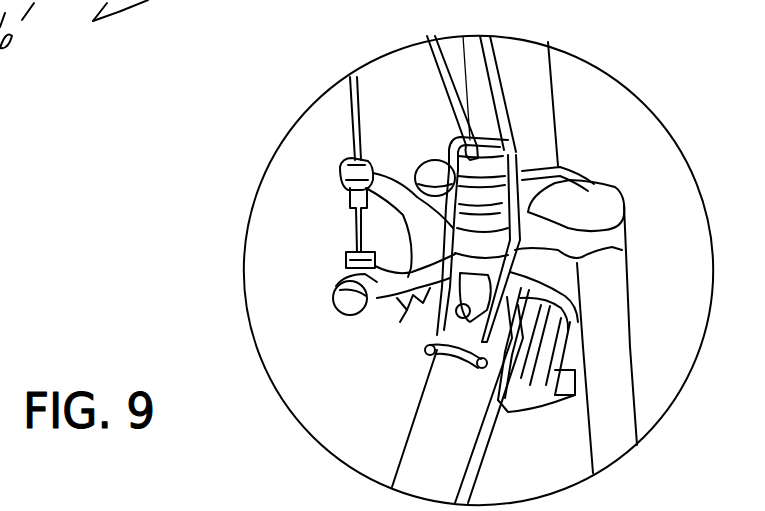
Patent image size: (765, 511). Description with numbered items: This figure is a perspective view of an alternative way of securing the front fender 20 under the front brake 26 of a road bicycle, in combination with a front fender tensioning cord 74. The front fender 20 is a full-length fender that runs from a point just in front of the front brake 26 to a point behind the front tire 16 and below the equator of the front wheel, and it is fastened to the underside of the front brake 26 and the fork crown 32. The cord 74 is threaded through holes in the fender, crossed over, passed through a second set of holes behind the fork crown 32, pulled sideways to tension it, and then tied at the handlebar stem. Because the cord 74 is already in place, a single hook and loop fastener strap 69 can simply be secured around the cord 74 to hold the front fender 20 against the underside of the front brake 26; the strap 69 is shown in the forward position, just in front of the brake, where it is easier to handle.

The front tire 16 is at (455, 445).
The front fender 20 is at (460, 333).
The front brake 26 is at (428, 230).
The fork crown 32 is at (587, 212).
The hook and loop fastener strap 69 is at (520, 193).
The cord 74 is at (504, 95).